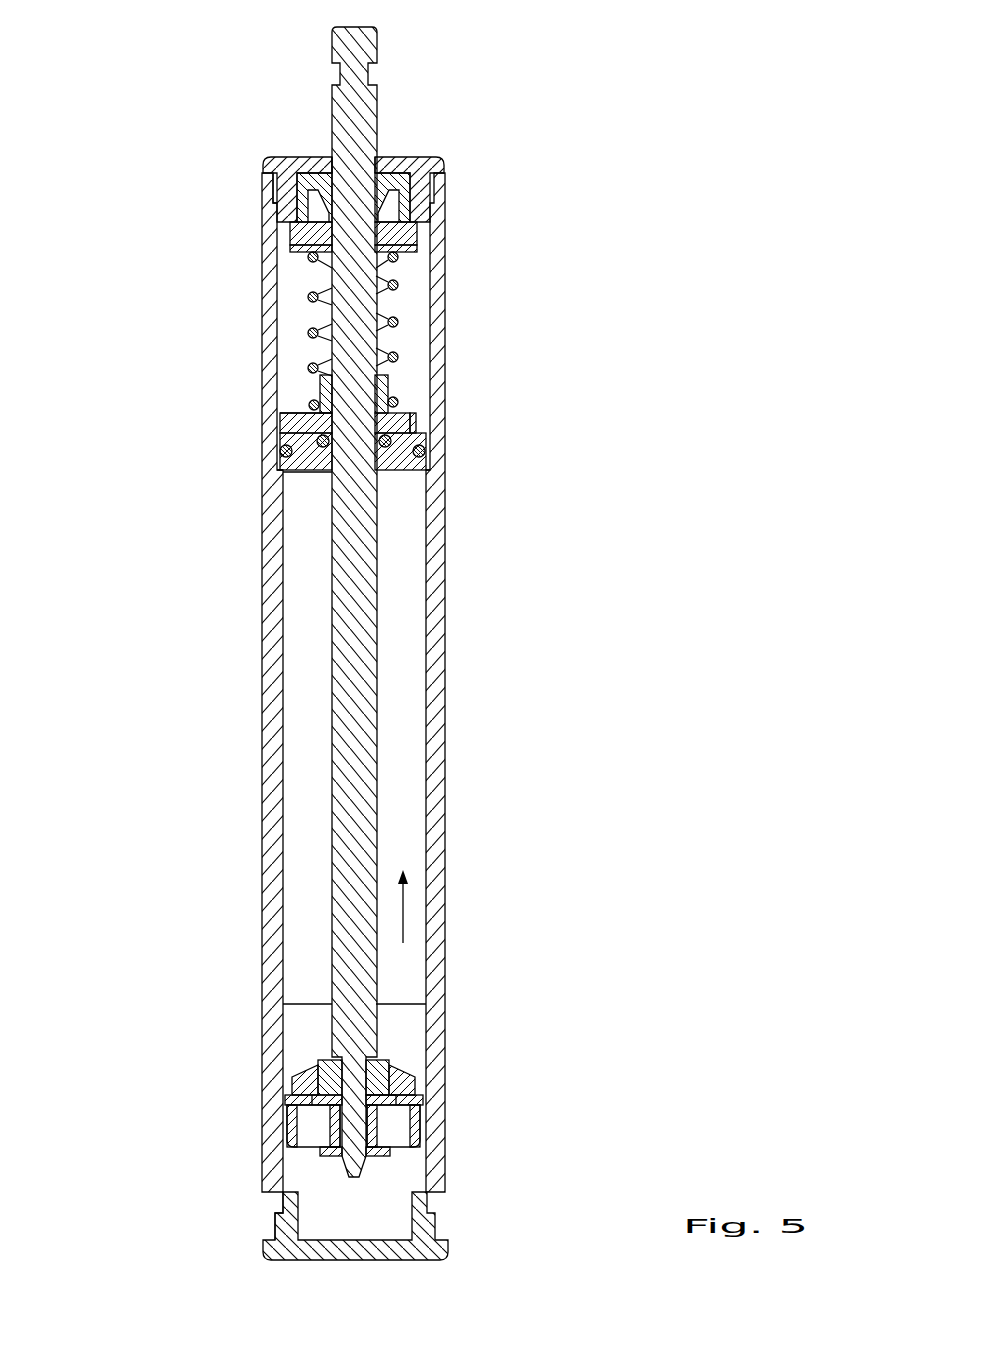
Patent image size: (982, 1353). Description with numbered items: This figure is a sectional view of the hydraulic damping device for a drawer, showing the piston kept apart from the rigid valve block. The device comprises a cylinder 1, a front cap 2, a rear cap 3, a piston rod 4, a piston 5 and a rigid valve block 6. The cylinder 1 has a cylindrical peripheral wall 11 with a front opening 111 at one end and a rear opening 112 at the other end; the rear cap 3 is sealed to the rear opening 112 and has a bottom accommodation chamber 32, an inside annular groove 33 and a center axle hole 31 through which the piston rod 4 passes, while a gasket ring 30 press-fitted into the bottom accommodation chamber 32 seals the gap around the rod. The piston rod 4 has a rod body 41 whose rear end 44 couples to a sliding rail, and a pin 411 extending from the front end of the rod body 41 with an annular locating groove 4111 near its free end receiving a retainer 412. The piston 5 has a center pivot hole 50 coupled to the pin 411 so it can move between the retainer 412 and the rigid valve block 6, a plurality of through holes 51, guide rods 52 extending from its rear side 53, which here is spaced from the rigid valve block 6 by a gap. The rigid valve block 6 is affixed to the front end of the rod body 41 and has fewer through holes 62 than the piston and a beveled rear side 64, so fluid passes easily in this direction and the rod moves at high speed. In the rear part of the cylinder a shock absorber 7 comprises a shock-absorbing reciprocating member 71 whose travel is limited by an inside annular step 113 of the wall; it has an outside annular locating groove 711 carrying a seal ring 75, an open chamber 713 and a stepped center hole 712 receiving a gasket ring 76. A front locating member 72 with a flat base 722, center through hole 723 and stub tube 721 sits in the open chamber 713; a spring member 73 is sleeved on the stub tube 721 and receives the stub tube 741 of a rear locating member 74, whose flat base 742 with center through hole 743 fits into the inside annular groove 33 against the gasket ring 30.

The cylinder 1 is at (331, 682).
The cylindrical peripheral wall 11 is at (283, 625).
The front opening 111 is at (275, 1225).
The rear opening 112 is at (273, 195).
The inside annular step 113 is at (281, 478).
The front cap 2 is at (294, 1234).
The rear cap 3 is at (347, 153).
The gasket ring 30 is at (313, 177).
The center axle hole 31 is at (385, 160).
The bottom accommodation chamber 32 is at (298, 188).
The inside annular groove 33 is at (417, 228).
The piston rod 4 is at (351, 614).
The rod body 41 is at (333, 113).
The pin 411 is at (378, 1090).
The annular locating groove 4111 is at (345, 1157).
The retainer 412 is at (382, 1152).
The rear end 44 is at (338, 73).
The piston 5 is at (367, 1122).
The center pivot hole 50 is at (367, 1122).
The through holes 51 is at (313, 1142).
The guide rods 52 is at (295, 1100).
The rear side 53 is at (392, 1105).
The rigid valve block 6 is at (352, 1045).
The through holes 62 is at (297, 1076).
The rear side 64 is at (320, 1062).
The shock absorber 7 is at (335, 407).
The shock-absorbing reciprocating member 71 is at (388, 473).
The outside annular locating groove 711 is at (422, 448).
The stepped center hole 712 is at (392, 437).
The open chamber 713 is at (414, 420).
The front locating member 72 is at (322, 395).
The stub tube 721 is at (318, 383).
The flat base 722 is at (290, 428).
The center through hole 723 is at (320, 406).
The spring member 73 is at (398, 300).
The rear locating member 74 is at (313, 288).
The stub tube 741 is at (396, 258).
The flat base 742 is at (300, 248).
The center through hole 743 is at (310, 262).
The seal ring 75 is at (280, 470).
The gasket ring 76 is at (320, 473).